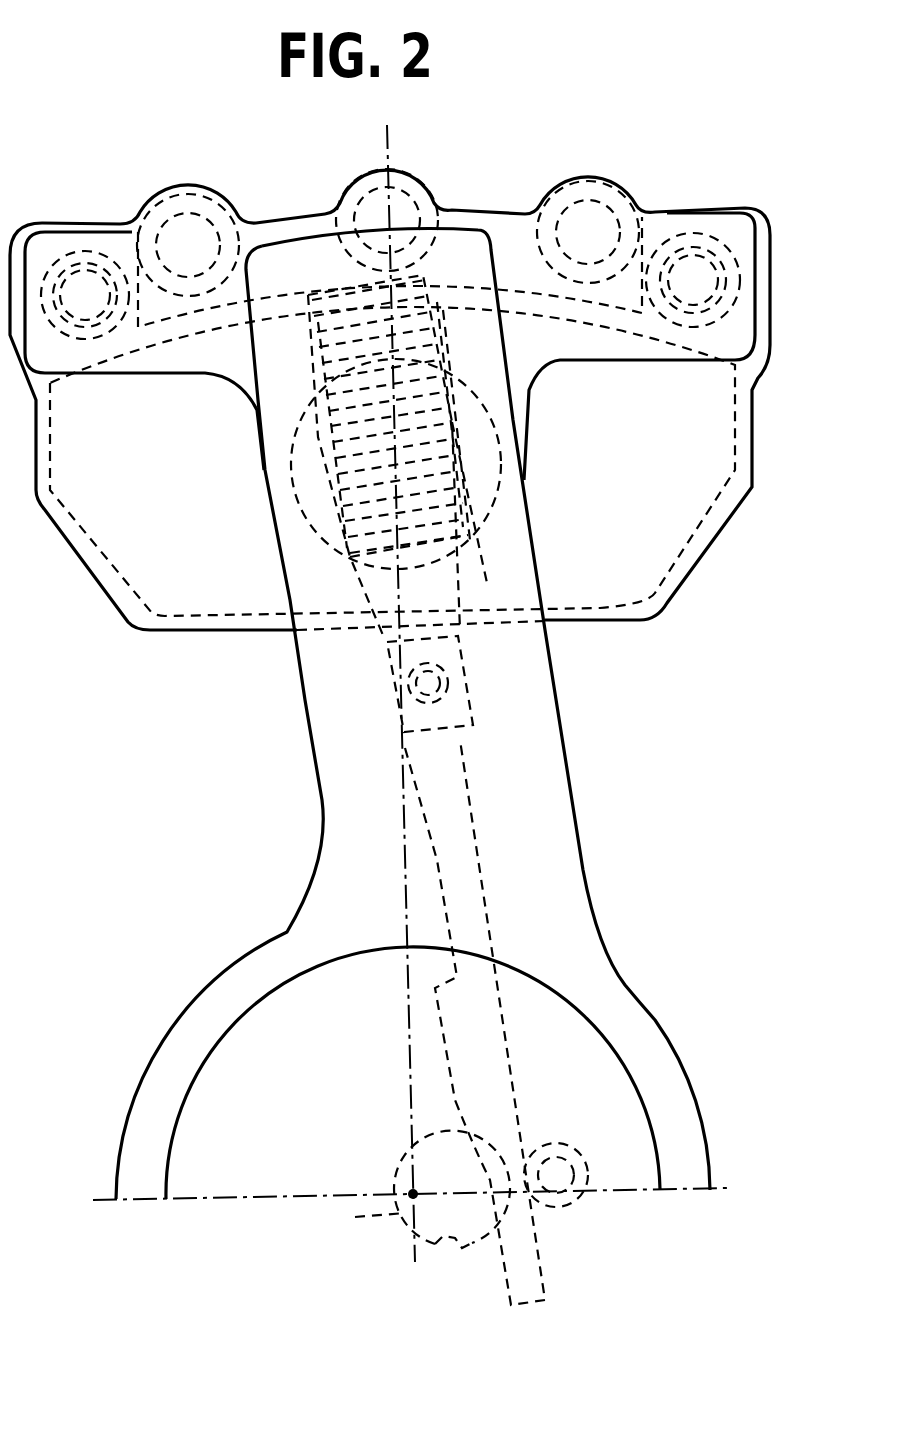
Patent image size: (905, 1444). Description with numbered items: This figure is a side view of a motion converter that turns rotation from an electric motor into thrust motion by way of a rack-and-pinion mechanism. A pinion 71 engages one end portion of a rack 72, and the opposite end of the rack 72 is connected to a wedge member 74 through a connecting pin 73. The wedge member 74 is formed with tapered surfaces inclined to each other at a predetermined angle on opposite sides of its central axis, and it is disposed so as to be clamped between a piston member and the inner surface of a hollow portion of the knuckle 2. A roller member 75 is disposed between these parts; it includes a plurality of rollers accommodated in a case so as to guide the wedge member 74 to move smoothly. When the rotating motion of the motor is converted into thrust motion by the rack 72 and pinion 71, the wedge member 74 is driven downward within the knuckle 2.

The knuckle 2 is at (533, 797).
The pinion 71 is at (367, 1215).
The rack 72 is at (457, 1037).
The connecting pin 73 is at (412, 695).
The wedge member 74 is at (350, 575).
The roller member 75 is at (470, 527).